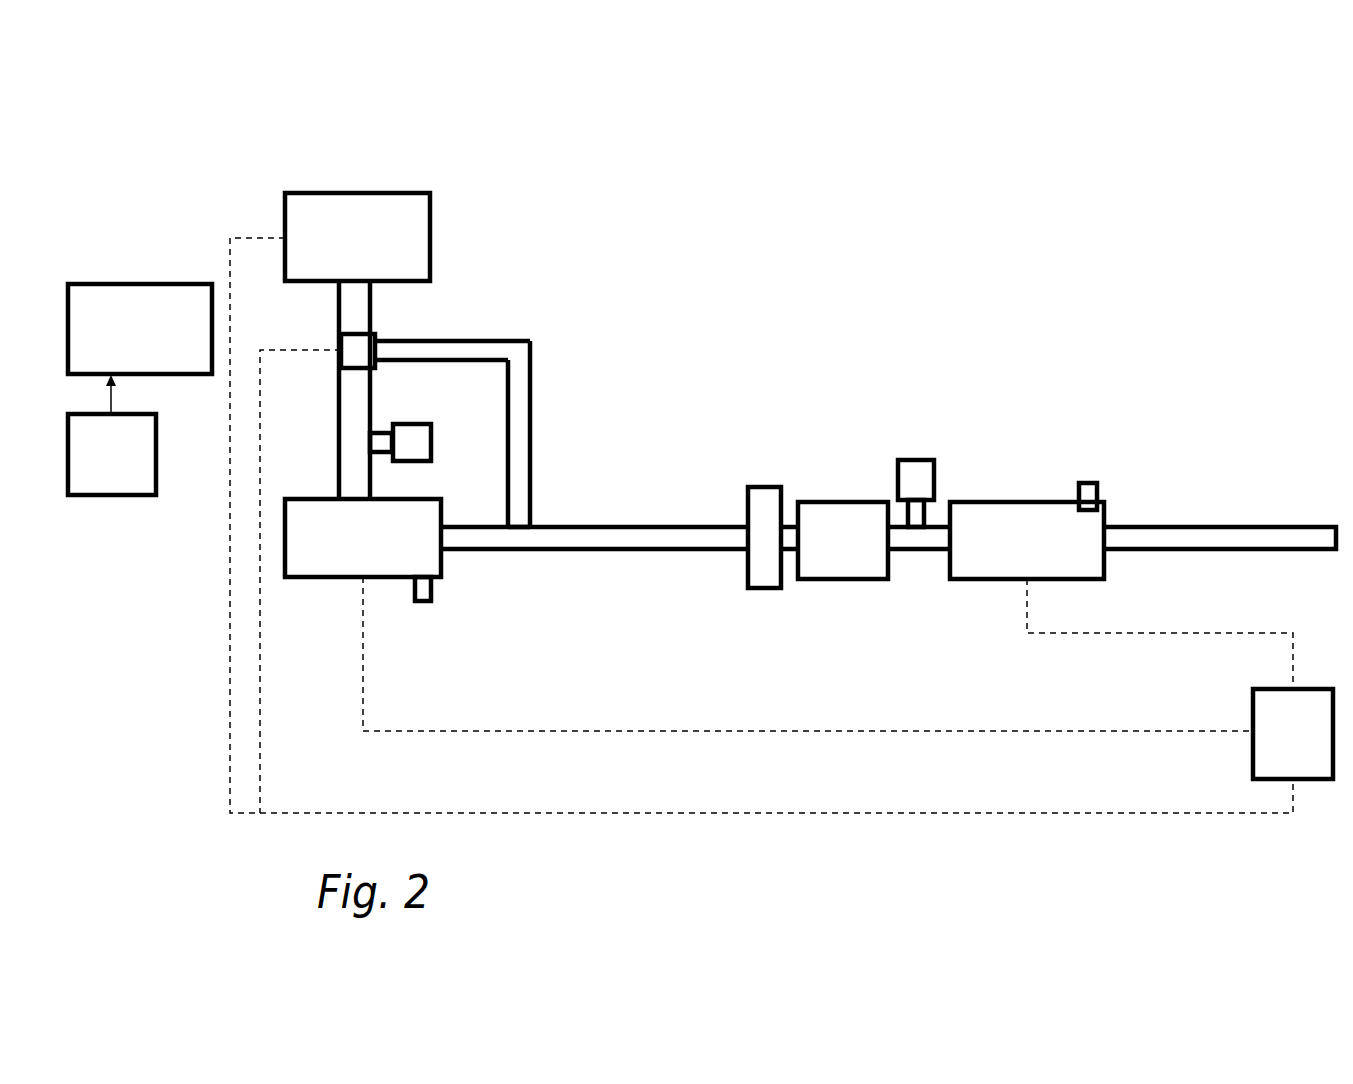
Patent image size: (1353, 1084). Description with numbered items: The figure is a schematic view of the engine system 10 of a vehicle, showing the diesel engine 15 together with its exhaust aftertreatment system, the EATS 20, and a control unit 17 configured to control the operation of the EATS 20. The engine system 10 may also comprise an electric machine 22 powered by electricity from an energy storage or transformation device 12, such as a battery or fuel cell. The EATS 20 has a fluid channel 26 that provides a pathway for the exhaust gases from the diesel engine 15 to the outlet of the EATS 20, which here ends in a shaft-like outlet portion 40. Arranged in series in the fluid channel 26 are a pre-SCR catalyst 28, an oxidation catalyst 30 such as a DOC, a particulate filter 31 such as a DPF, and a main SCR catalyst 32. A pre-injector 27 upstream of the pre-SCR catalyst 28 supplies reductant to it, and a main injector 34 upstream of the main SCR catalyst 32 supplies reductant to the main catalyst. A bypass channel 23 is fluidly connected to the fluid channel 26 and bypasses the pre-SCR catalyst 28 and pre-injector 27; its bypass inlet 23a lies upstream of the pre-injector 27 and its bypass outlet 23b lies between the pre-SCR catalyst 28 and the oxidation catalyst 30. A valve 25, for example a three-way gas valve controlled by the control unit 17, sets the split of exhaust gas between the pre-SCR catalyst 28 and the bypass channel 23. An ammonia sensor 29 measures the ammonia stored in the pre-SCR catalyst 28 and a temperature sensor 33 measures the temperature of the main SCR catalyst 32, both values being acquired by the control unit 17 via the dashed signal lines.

The engine system 10 is at (590, 254).
The energy storage or transformation device 12 is at (83, 497).
The diesel engine 15 is at (315, 192).
The control unit 17 is at (1313, 782).
The EATS 20 is at (1066, 407).
The electric machine 22 is at (132, 284).
The bypass channel 23 is at (533, 373).
The bypass inlet 23a is at (380, 340).
The bypass outlet 23b is at (535, 524).
The valve 25 is at (337, 345).
The fluid channel 26 is at (628, 492).
The pre-injector 27 is at (432, 450).
The pre-SCR catalyst 28 is at (316, 578).
The ammonia sensor 29 is at (415, 602).
The oxidation catalyst 30 is at (758, 590).
The particulate filter 31 is at (842, 580).
The main SCR catalyst 32 is at (1007, 581).
The temperature sensor 33 is at (1097, 483).
The main injector 34 is at (937, 495).
The output shaft 40 is at (1245, 525).